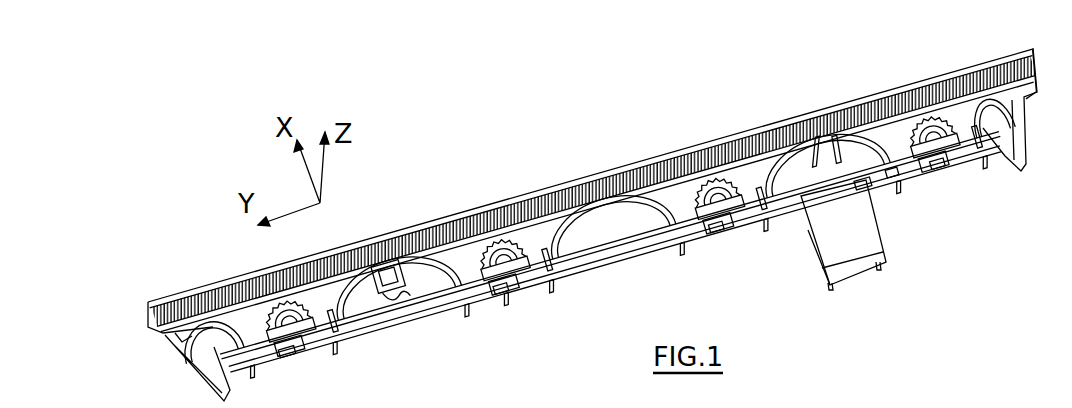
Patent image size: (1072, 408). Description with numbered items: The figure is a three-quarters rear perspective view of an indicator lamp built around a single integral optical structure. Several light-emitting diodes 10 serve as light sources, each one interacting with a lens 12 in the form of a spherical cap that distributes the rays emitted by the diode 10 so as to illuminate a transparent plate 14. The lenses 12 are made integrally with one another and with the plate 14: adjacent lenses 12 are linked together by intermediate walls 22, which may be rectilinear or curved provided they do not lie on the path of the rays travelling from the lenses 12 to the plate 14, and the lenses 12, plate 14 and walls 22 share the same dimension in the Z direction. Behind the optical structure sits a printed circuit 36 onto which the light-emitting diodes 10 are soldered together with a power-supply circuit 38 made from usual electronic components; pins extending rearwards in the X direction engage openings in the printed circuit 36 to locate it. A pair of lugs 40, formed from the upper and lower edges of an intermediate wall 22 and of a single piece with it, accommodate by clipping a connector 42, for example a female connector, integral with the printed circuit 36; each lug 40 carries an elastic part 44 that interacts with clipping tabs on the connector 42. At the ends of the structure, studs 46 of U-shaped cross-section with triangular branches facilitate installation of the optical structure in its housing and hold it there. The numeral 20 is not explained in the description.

The light-emitting diode 10 is at (928, 392).
The lens 12 is at (272, 312).
The transparent plate 14 is at (425, 230).
The housing 20 is at (830, 400).
The intermediate wall 22 is at (358, 297).
The printed circuit 36 is at (450, 312).
The power-supply circuit 38 is at (870, 190).
The lug 40 is at (404, 273).
The connector 42 is at (835, 245).
The elastic part 44 is at (407, 305).
The stud 46 is at (205, 352).